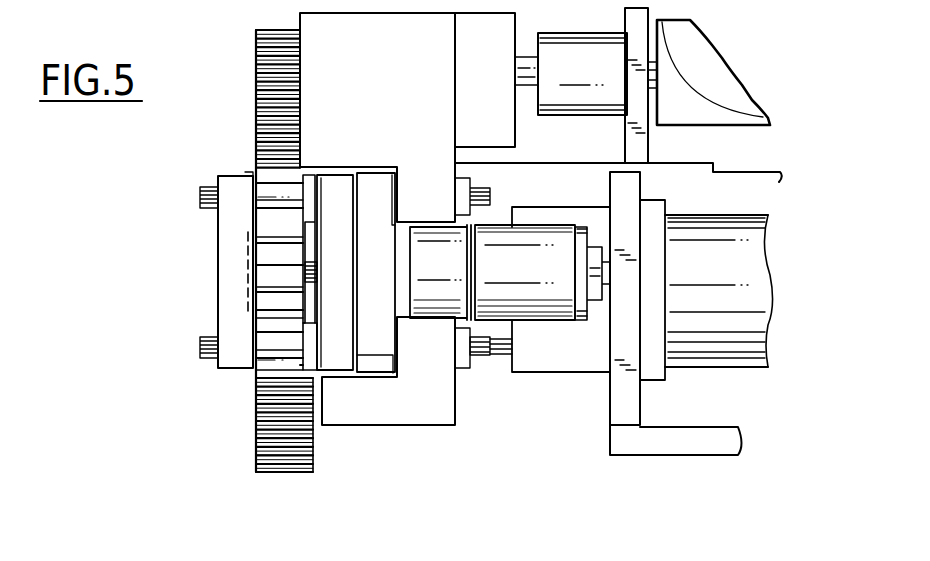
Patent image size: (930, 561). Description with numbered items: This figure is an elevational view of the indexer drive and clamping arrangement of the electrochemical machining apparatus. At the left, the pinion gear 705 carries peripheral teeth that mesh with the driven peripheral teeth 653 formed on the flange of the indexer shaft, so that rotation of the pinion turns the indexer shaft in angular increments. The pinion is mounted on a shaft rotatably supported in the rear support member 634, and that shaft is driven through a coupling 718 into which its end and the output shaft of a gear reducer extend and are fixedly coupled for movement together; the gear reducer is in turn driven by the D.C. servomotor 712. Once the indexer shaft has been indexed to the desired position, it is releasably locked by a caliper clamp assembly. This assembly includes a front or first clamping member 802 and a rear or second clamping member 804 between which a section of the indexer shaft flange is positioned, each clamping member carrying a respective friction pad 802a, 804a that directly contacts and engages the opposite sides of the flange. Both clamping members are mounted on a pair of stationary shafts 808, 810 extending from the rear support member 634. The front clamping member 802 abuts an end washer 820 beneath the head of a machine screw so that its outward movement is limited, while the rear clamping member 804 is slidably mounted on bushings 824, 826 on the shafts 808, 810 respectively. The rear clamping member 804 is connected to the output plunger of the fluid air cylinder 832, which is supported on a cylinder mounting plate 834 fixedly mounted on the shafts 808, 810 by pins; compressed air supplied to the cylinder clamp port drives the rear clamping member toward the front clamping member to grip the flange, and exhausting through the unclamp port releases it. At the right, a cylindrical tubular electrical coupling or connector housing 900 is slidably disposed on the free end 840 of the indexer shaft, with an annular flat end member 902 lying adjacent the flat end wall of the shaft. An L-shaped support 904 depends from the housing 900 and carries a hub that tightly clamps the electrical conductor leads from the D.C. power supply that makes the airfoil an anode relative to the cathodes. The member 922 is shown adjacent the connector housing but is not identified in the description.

The pinion gear 705 is at (258, 45).
The rear support member 634 is at (410, 83).
The bushing 824 is at (307, 174).
The rear or second clamping member 804 is at (333, 186).
The friction pad 804a is at (318, 312).
The cylinder mounting plate 834 is at (384, 203).
The stationary shaft 808 is at (272, 195).
The front or first clamping member 802 is at (228, 272).
The friction pad 802a is at (248, 231).
The end washer 820 is at (213, 363).
The stationary shaft 810 is at (270, 358).
The bushing 826 is at (303, 363).
The peripheral teeth 653 is at (255, 453).
The fluid air cylinder 832 is at (540, 275).
The free end of the indexer shaft 840 is at (514, 342).
The electrical coupling or connector housing 900 is at (572, 371).
The annular flat end member 902 is at (661, 380).
The L-shaped support 904 is at (600, 450).
The shaft 922 is at (736, 274).
The coupling 718 is at (598, 82).
The D.C. servomotor 712 is at (718, 52).